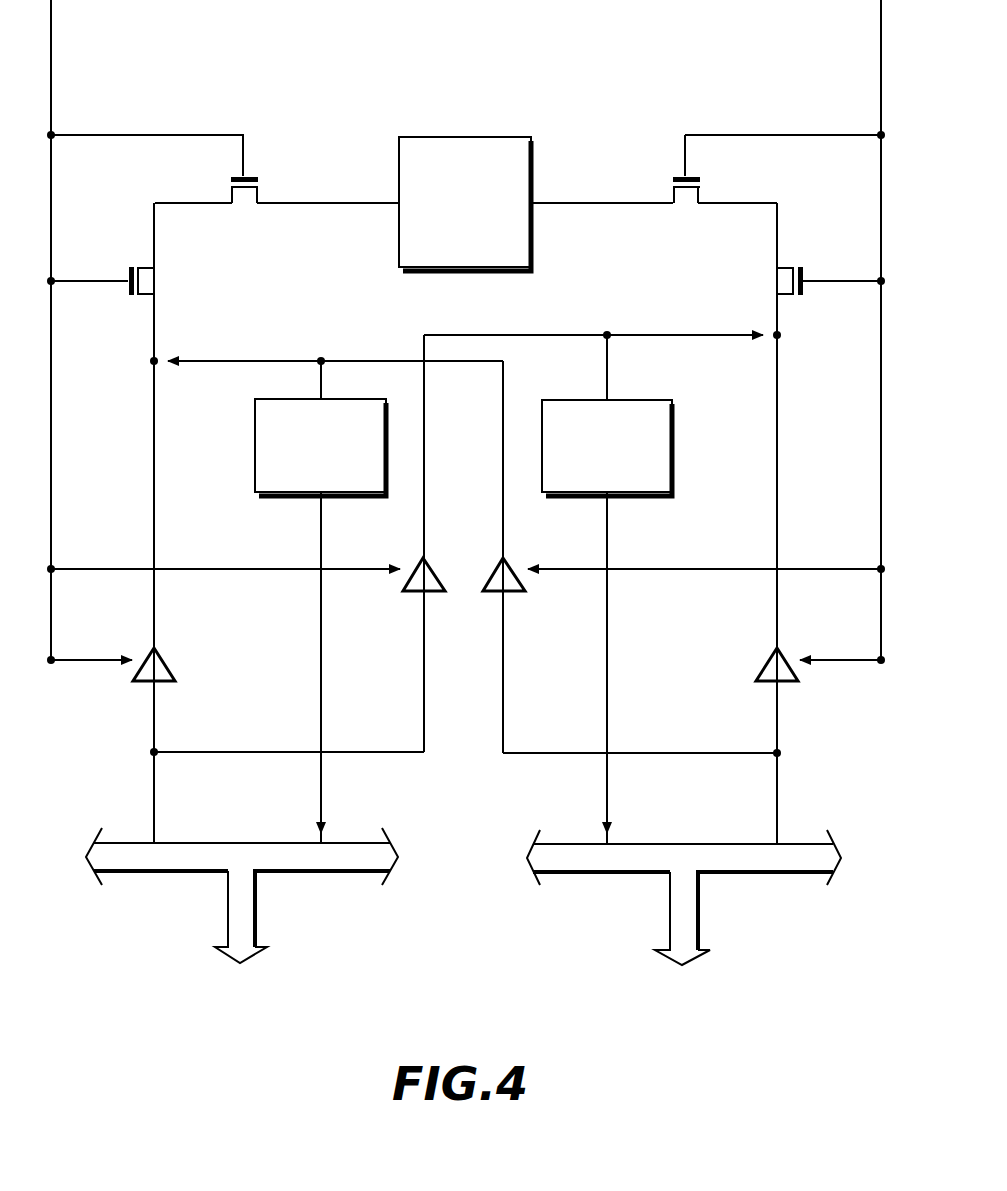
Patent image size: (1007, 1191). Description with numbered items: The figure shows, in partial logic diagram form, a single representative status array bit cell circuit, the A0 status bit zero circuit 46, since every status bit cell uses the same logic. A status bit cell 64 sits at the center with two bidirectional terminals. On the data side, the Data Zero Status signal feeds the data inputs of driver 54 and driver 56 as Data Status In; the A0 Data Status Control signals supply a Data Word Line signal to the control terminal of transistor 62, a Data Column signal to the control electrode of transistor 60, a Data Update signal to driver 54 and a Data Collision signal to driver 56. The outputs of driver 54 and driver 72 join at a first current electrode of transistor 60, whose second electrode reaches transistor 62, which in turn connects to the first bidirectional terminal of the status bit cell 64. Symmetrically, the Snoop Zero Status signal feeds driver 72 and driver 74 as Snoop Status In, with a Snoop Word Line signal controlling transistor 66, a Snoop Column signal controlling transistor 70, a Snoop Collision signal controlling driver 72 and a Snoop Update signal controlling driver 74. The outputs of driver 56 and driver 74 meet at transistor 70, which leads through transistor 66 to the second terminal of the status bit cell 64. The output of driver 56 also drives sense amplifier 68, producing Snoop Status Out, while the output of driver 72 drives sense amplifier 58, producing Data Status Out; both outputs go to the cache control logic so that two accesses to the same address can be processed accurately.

The A0 status bit 0 46 is at (112, 952).
The driver 54 is at (165, 652).
The driver 56 is at (430, 560).
The sense amplifier 58 is at (374, 484).
The transistor 60 is at (131, 297).
The transistor 62 is at (252, 178).
The status bit cell 64 is at (519, 254).
The transistor 66 is at (676, 178).
The sense amplifier 68 is at (658, 484).
The transistor 70 is at (803, 297).
The driver 72 is at (510, 592).
The driver 74 is at (768, 655).